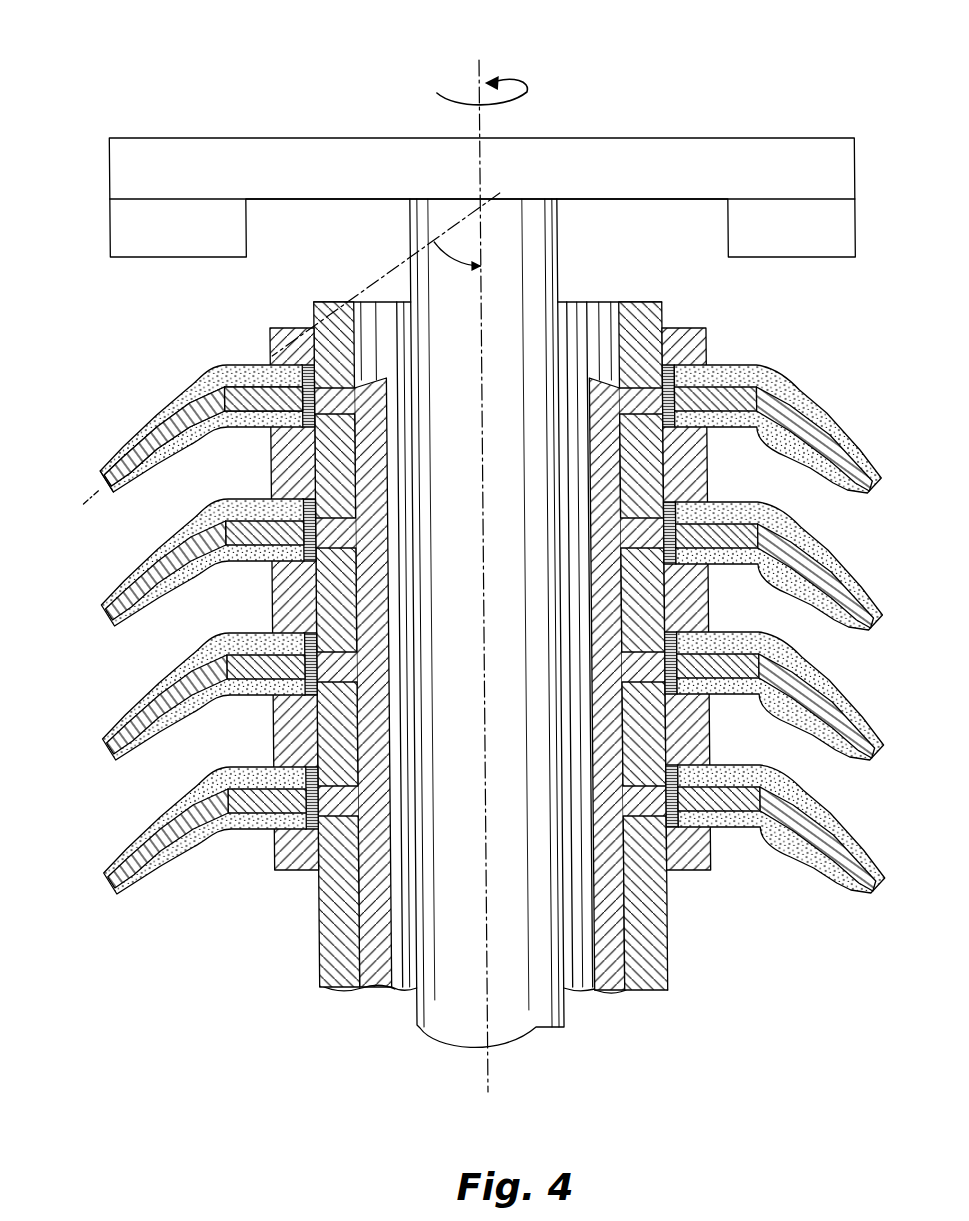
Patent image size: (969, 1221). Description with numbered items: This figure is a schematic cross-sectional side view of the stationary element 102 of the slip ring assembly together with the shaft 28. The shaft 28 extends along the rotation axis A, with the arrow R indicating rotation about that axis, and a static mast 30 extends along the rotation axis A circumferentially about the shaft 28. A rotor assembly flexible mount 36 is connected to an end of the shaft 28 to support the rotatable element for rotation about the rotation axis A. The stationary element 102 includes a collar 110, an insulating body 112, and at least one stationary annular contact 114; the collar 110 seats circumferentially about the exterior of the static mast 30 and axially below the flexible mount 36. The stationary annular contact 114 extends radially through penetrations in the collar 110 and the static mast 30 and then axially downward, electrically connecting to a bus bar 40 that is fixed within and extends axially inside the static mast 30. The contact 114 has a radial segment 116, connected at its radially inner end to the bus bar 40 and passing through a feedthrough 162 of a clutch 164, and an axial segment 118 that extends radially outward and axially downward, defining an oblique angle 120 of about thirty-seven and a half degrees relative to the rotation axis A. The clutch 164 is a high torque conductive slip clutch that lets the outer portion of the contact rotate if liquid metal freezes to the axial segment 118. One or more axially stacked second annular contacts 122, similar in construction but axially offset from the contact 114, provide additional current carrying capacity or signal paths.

The shaft 28 is at (436, 1033).
The static mast 30 is at (320, 962).
The rotor assembly flexible mount 36 is at (248, 238).
The bus bar 40 is at (362, 988).
The stationary element 102 is at (473, 681).
The collar 110 is at (268, 327).
The insulating body 112 is at (193, 440).
The stationary annular contact 114 is at (104, 500).
The radial segment 116 is at (248, 392).
The axial segment 118 is at (133, 456).
The oblique angle 120 is at (441, 250).
The second annular contact 122 is at (114, 623).
The feedthrough 162 is at (302, 436).
The clutch 164 is at (324, 378).
The rotation axis A is at (482, 1074).
The direction of rotation R is at (497, 90).